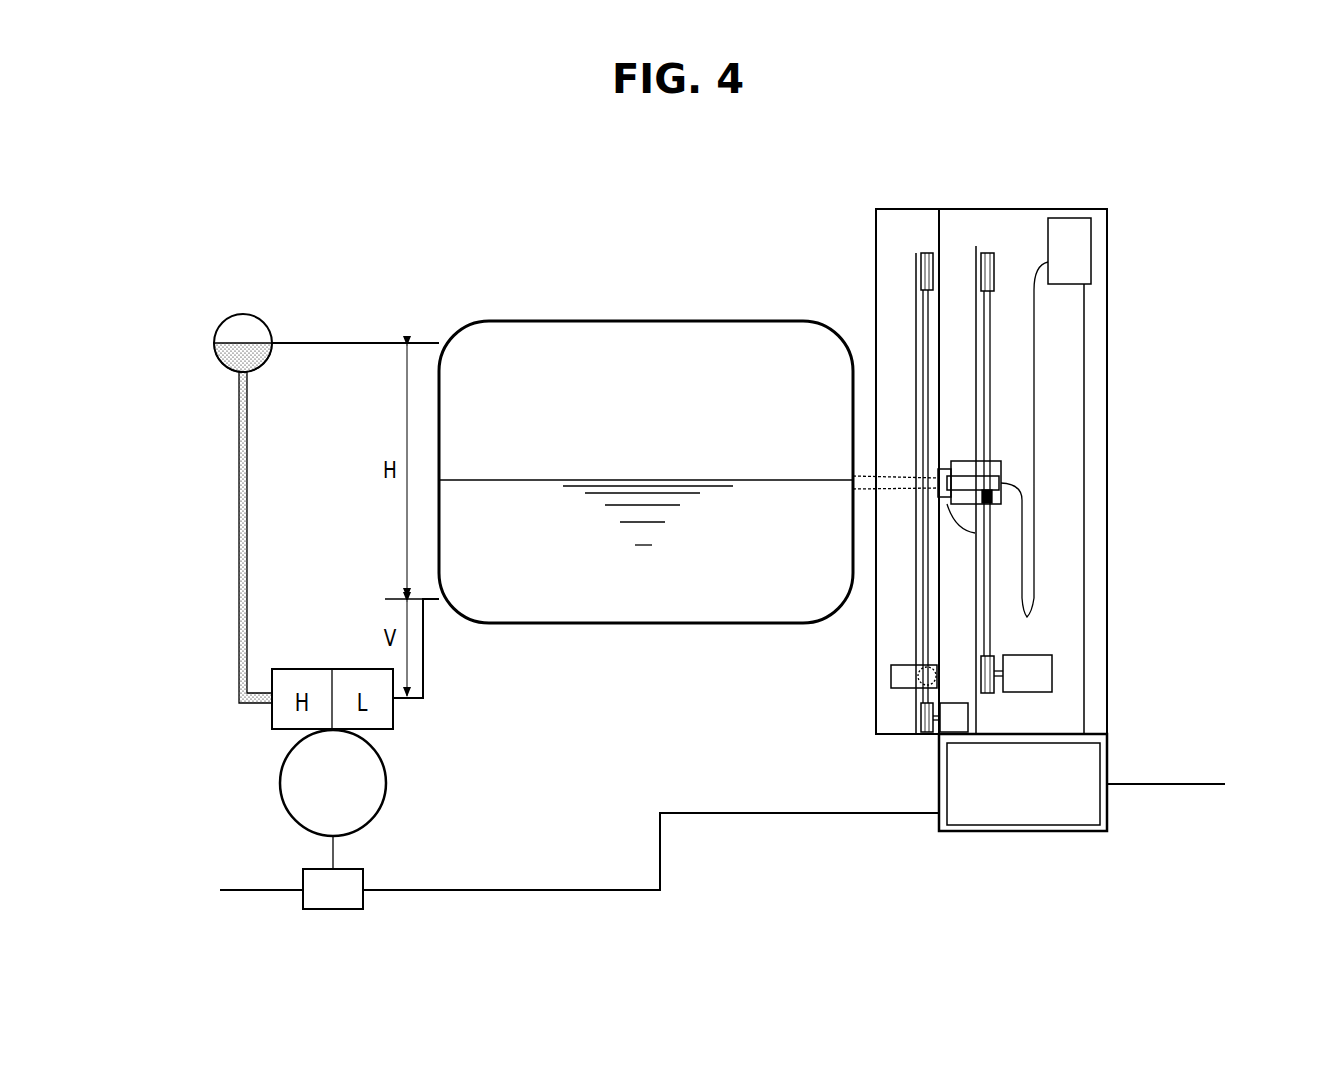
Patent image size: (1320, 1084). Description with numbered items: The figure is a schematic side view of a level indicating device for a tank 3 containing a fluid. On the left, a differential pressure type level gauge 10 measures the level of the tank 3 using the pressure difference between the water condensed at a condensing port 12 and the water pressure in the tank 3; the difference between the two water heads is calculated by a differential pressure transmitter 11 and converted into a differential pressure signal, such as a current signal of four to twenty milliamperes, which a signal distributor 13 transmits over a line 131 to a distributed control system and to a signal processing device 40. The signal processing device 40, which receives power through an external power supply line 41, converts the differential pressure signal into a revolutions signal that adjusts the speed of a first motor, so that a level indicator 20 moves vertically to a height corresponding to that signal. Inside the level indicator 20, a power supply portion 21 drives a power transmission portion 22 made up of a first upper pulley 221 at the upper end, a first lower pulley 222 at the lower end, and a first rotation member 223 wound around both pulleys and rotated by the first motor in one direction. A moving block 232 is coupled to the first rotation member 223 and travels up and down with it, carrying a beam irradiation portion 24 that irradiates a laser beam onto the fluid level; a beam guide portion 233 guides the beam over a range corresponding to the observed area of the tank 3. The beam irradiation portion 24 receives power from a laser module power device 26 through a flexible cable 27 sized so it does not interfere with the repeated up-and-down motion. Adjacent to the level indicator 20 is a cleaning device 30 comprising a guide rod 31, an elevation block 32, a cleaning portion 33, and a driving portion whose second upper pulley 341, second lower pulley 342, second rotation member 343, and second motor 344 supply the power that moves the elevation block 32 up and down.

The tank 3 is at (504, 321).
The differential pressure type level gauge 10 is at (212, 660).
The differential pressure transmitter 11 is at (281, 781).
The condensing port 12 is at (244, 314).
The signal distributor 13 is at (363, 876).
The pipe 131 is at (547, 890).
The level indicator 20 is at (1078, 209).
The power supply portion 21 is at (1052, 672).
The power transmission portion 22 is at (1246, 843).
The first upper pulley 221 is at (994, 270).
The first lower pulley 222 is at (994, 693).
The first rotation member 223 is at (990, 381).
The beam irradiation portion 24 is at (1055, 478).
The moving block 232 is at (1001, 462).
The beam guide portion 233 is at (975, 533).
The laser module power device 26 is at (1091, 252).
The cable 27 is at (1034, 318).
The cleaning device 30 is at (896, 207).
The guide rod 31 is at (917, 368).
The elevation block 32 is at (891, 674).
The cleaning portion 33 is at (920, 665).
The second upper pulley 341 is at (928, 253).
The second lower pulley 342 is at (923, 733).
The second rotation member 343 is at (924, 333).
The second motor 344 is at (953, 720).
The signal processing device 40 is at (1053, 831).
The external power supply line 41 is at (1170, 784).